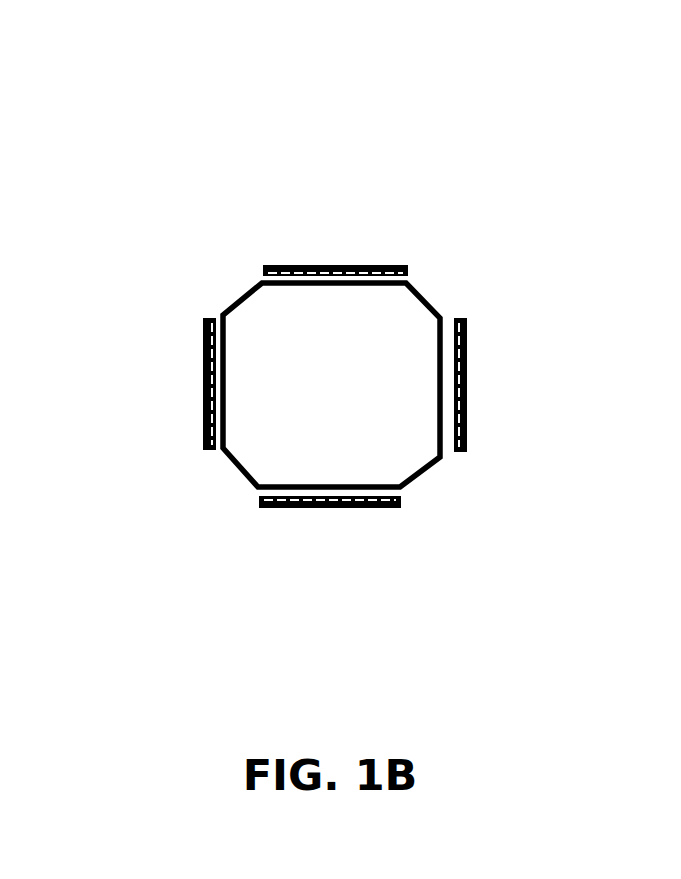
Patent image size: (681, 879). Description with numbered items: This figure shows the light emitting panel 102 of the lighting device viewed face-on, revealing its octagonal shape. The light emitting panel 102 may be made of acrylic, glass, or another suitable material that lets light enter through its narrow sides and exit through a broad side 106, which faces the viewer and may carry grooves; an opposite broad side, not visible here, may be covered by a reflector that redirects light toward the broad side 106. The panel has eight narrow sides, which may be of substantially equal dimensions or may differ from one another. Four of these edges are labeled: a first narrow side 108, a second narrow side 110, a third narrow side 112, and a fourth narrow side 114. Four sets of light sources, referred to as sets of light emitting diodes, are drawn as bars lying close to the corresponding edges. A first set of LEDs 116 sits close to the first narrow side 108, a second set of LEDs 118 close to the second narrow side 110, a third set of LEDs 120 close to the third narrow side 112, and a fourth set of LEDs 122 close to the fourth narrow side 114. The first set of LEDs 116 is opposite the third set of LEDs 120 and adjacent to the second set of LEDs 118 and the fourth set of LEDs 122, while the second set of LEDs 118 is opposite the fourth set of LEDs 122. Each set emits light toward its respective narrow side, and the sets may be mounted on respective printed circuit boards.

The light emitting panel 102 is at (423, 286).
The broad side 106 is at (311, 324).
The first narrow side 108 is at (222, 446).
The second narrow side 110 is at (403, 488).
The third narrow side 112 is at (444, 324).
The fourth narrow side 114 is at (259, 279).
The first set of LEDs 116 is at (202, 382).
The second set of LEDs 118 is at (337, 509).
The third set of LEDs 120 is at (468, 393).
The fourth set of LEDs 122 is at (341, 262).